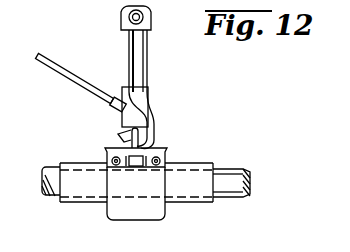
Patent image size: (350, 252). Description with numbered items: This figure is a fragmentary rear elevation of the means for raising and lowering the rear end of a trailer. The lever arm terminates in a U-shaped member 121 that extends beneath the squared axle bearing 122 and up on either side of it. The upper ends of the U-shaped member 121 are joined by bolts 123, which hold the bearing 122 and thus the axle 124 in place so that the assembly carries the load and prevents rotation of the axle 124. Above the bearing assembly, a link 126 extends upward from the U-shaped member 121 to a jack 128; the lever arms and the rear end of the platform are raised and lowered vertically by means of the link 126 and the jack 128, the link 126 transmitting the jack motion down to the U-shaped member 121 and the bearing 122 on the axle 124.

The U-shaped member 121 is at (165, 212).
The squared axle bearing 122 is at (207, 163).
The bolt 123 is at (163, 150).
The axle 124 is at (252, 172).
The link 126 is at (135, 54).
The jack 128 is at (145, 82).